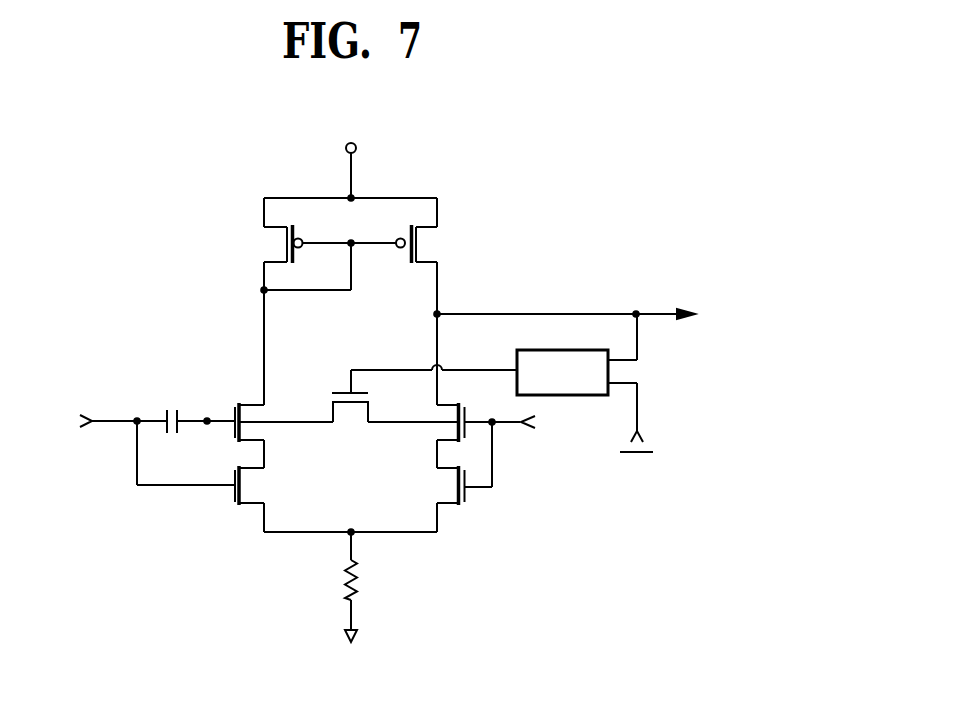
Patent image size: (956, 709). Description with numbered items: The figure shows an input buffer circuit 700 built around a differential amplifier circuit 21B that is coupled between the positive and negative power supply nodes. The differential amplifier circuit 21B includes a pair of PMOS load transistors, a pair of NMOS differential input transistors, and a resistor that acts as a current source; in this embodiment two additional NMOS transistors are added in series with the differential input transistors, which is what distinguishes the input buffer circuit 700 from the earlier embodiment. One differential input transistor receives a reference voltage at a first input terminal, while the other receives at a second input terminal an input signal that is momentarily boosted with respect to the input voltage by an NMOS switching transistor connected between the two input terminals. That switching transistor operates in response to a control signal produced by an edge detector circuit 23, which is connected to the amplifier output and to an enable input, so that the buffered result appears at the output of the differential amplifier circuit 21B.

The input buffer circuit 700 is at (133, 152).
The differential amplifier circuit 21B is at (495, 240).
The edge detector circuit 23 is at (517, 358).